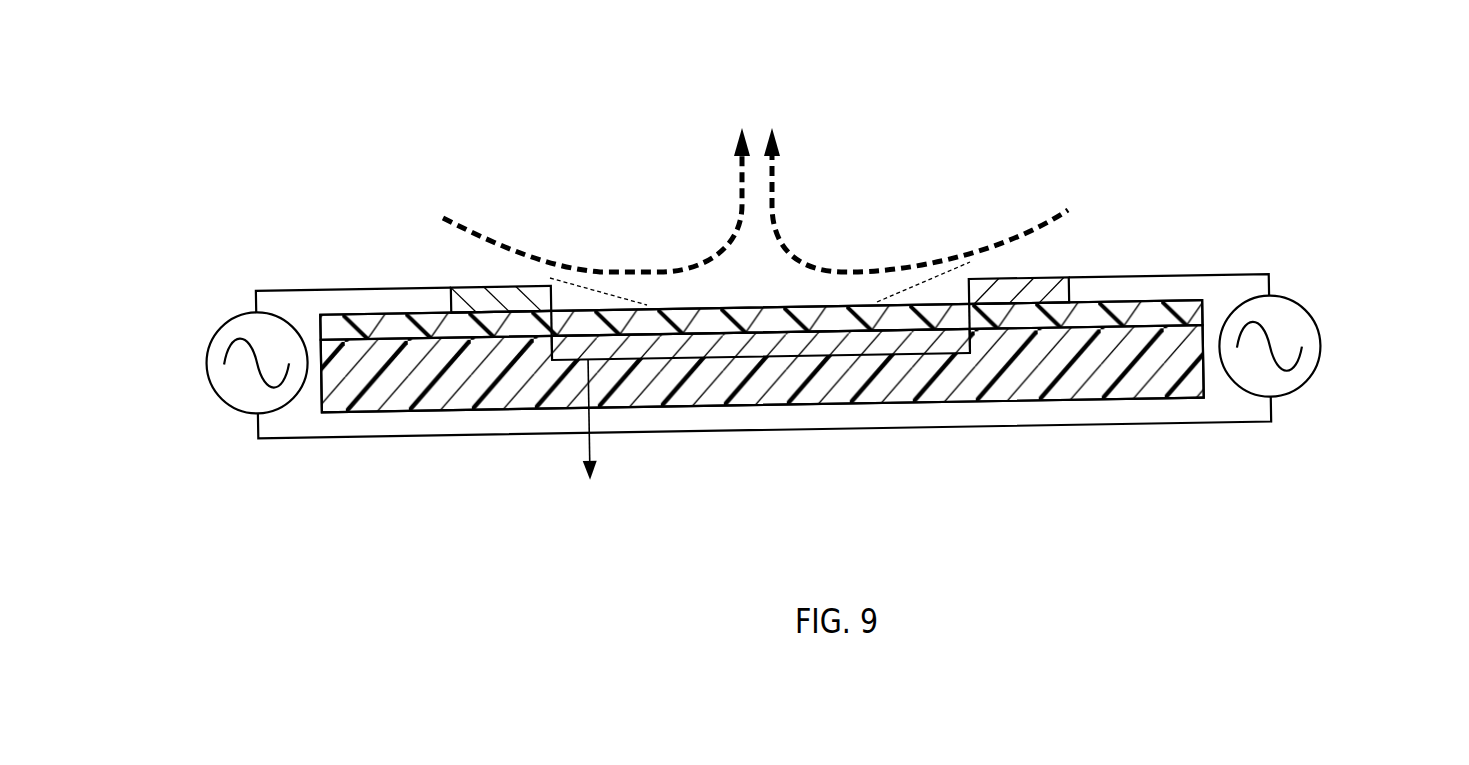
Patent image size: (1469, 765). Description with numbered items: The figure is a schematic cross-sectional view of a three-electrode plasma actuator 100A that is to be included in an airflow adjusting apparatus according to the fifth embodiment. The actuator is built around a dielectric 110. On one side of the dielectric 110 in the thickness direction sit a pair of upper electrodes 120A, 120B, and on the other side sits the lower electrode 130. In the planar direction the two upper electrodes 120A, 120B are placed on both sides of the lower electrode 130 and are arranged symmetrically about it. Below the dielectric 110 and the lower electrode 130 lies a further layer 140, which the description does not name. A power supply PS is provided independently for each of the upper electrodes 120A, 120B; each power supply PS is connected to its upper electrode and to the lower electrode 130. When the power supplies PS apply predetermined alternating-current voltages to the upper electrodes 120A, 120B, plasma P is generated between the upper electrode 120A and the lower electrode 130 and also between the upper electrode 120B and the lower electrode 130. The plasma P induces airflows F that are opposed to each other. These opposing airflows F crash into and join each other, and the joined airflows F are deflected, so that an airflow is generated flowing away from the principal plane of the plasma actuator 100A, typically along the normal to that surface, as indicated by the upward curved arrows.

The three-electrode plasma actuator 100A is at (378, 169).
The dielectric 110 is at (427, 313).
The upper electrode 120A is at (497, 287).
The upper electrode 120B is at (1025, 277).
The lower electrode 130 is at (745, 355).
The substrate 140 is at (1020, 400).
The power supply PS is at (222, 332).
The plasma P is at (592, 273).
The airflow F is at (806, 268).